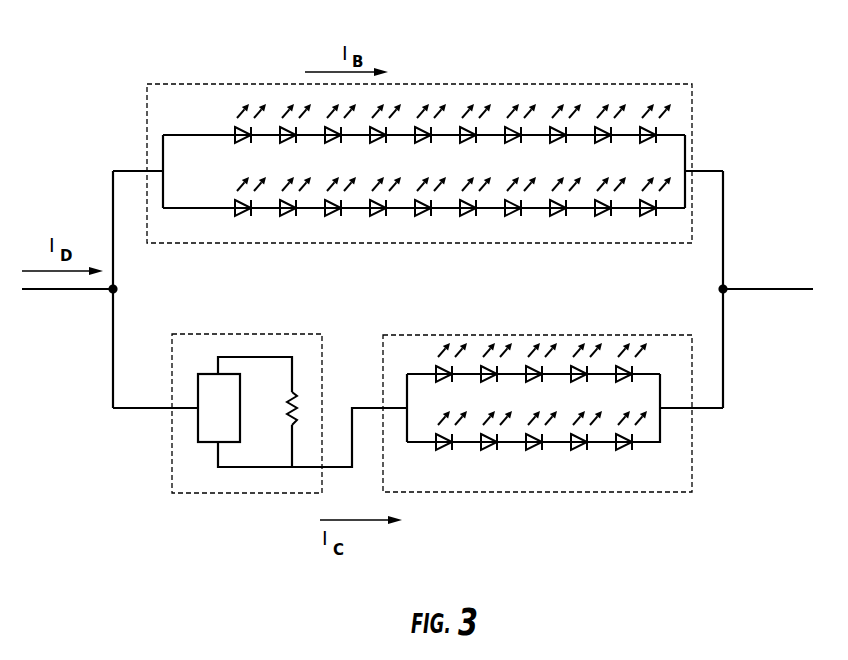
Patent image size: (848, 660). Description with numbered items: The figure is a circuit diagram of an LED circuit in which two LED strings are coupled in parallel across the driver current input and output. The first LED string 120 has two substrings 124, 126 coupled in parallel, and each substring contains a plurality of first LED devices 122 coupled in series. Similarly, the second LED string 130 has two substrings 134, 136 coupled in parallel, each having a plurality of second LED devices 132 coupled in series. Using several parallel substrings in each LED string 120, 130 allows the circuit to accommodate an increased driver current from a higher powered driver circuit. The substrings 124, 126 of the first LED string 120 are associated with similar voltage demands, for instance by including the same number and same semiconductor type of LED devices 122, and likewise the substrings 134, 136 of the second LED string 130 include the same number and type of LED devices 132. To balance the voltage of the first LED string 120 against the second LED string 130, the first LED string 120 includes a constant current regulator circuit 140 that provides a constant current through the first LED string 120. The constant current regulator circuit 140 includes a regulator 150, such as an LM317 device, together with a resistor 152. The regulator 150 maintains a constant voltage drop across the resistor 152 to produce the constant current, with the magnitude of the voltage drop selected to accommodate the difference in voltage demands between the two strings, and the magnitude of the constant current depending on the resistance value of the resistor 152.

The first LED string 120 is at (553, 418).
The first LED devices 122 is at (622, 443).
The substring of first LED string 124 is at (658, 335).
The substring of first LED string 126 is at (648, 443).
The second LED string 130 is at (435, 133).
The second LED devices 132 is at (296, 144).
The substring of second LED string 134 is at (424, 130).
The substring of second LED string 136 is at (208, 207).
The constant current regulator circuit 140 is at (289, 425).
The regulator 150 is at (208, 374).
The resistor 152 is at (294, 392).